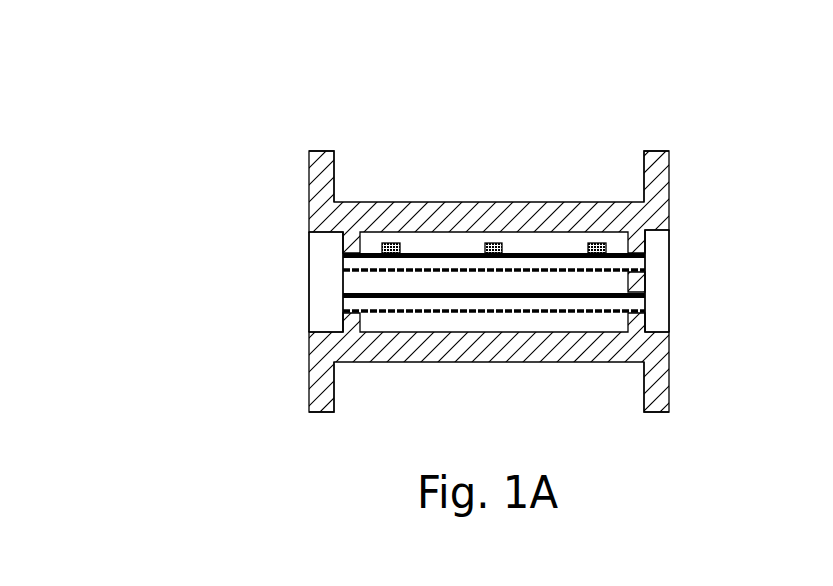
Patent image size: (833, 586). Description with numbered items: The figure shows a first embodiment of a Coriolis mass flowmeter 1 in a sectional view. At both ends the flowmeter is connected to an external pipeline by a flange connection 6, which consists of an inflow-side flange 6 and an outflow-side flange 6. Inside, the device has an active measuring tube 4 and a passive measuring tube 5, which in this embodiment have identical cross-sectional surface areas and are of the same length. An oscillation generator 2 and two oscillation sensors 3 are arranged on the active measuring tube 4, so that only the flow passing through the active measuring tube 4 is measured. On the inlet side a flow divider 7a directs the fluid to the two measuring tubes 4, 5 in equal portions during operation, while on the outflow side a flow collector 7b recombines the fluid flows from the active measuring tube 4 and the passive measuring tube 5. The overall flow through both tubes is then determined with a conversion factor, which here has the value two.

The Coriolis mass flowmeter 1 is at (262, 128).
The oscillation generator 2 is at (492, 243).
The oscillation sensors 3 is at (390, 243).
The active measuring tube 4 is at (375, 271).
The passive measuring tube 5 is at (600, 312).
The flange connection 6 is at (704, 168).
The flow divider 7a is at (332, 312).
The flow collector 7b is at (634, 280).